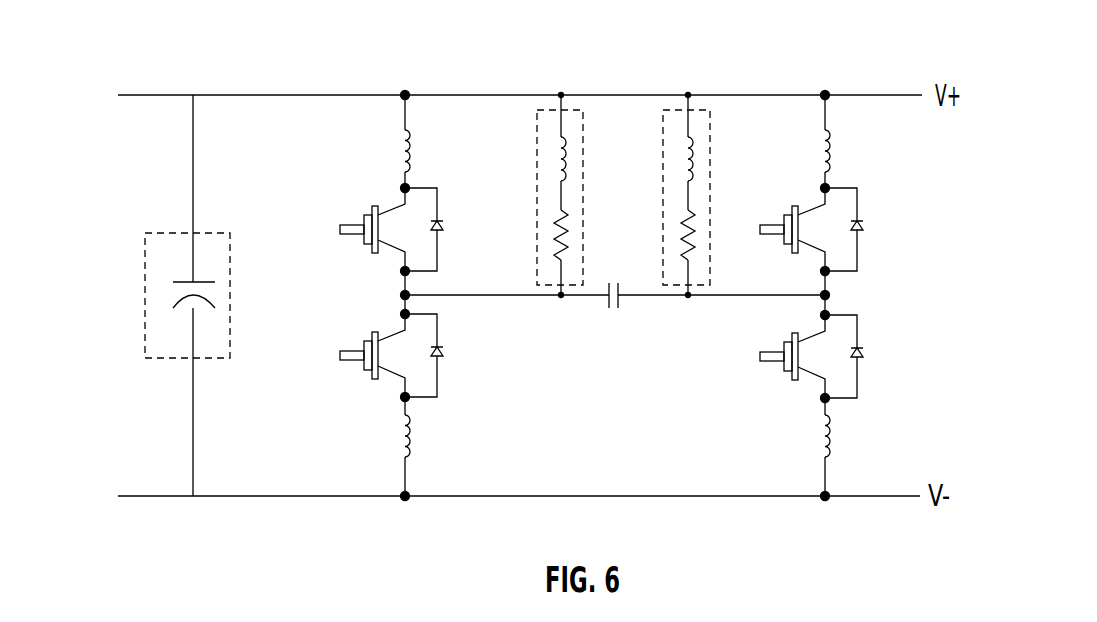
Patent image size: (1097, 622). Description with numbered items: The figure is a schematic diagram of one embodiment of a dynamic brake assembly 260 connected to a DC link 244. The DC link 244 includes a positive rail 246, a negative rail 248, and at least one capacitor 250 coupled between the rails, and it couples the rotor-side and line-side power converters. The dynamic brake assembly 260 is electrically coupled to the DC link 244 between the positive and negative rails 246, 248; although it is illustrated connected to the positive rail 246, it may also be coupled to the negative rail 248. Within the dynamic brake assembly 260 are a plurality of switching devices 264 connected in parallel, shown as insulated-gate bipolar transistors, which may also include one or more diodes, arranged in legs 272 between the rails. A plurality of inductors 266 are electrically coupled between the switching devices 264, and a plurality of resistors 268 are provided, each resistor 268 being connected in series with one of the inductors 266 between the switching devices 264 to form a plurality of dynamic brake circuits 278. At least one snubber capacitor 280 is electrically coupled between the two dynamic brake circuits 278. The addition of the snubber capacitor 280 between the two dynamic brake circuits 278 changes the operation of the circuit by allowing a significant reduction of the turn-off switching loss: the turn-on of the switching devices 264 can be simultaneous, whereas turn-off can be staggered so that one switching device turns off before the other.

The DC link 244 is at (96, 198).
The positive rail 246 is at (340, 95).
The negative rail 248 is at (308, 497).
The capacitor 250 is at (143, 298).
The dynamic brake assembly 260 is at (768, 49).
The switching devices 264 is at (380, 268).
The inductors 266 is at (550, 152).
The resistors 268 is at (550, 236).
The converter leg 272 is at (435, 150).
The dynamic brake circuits 278 is at (545, 108).
The snubber capacitor 280 is at (605, 304).